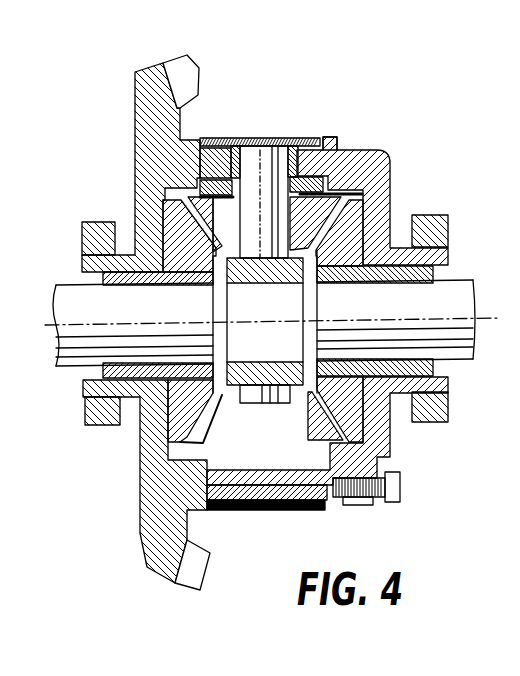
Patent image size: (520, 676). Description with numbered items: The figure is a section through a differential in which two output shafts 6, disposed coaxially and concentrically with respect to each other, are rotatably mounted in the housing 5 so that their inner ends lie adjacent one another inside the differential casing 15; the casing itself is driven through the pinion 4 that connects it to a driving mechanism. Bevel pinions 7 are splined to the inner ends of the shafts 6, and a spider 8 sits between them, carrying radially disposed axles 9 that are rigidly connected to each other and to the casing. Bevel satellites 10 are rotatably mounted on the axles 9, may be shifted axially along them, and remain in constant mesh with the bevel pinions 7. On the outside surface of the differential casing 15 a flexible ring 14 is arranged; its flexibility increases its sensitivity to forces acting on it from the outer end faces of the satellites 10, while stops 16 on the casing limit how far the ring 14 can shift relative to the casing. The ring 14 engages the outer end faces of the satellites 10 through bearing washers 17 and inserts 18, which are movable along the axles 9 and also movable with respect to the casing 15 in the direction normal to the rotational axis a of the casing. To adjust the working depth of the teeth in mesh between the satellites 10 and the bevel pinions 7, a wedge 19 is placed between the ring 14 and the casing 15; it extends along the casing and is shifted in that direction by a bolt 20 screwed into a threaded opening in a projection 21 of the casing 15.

The pinion 4 is at (203, 573).
The housing 5 is at (85, 424).
The output shafts 6 is at (80, 345).
The rotational axis a is at (478, 318).
The bevel pinions 7 is at (200, 403).
The spider 8 is at (252, 410).
The radially disposed axles 9 is at (278, 146).
The bevel satellites 10 is at (312, 207).
The ring 14 is at (308, 138).
The differential casing 15 is at (394, 157).
The stops 16 is at (336, 151).
The bearing washers 17 is at (212, 180).
The inserts 18 is at (236, 162).
The wedge 19 is at (287, 492).
The bolt 20 is at (401, 487).
The projection 21 is at (368, 505).